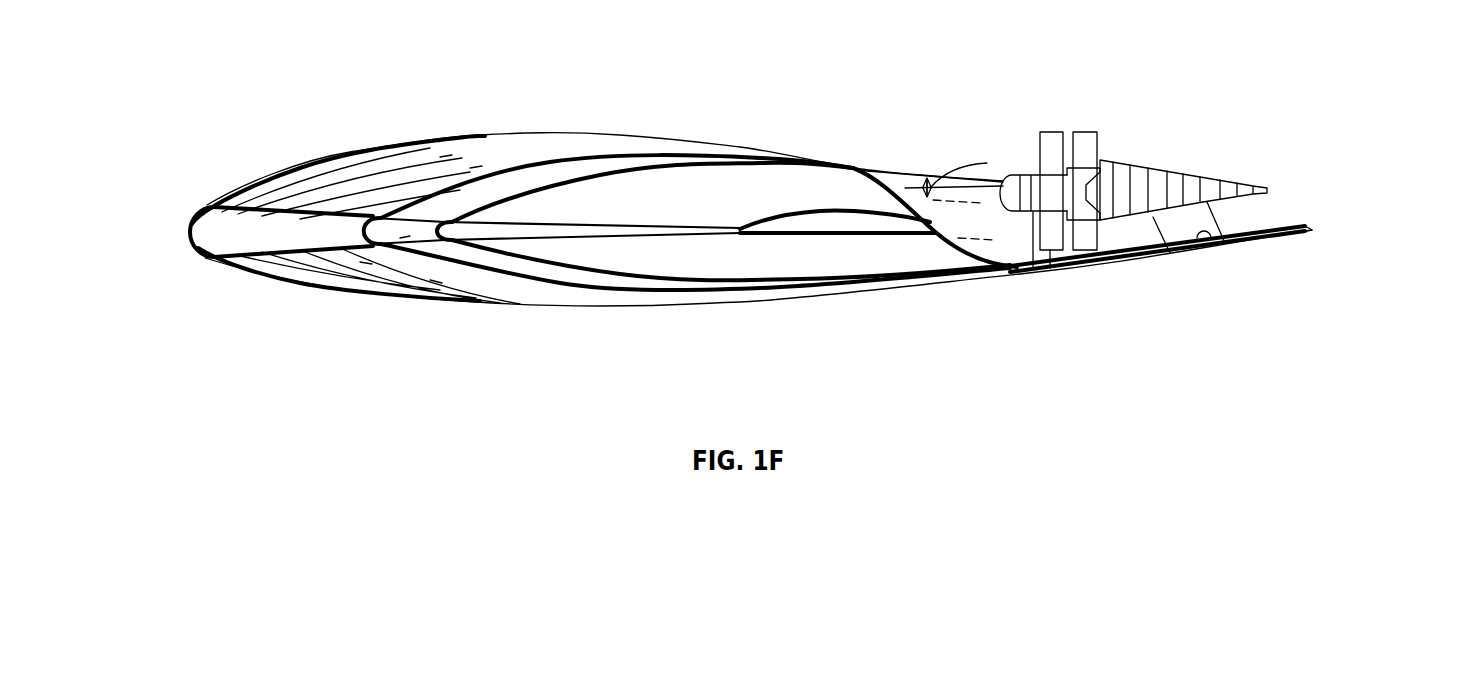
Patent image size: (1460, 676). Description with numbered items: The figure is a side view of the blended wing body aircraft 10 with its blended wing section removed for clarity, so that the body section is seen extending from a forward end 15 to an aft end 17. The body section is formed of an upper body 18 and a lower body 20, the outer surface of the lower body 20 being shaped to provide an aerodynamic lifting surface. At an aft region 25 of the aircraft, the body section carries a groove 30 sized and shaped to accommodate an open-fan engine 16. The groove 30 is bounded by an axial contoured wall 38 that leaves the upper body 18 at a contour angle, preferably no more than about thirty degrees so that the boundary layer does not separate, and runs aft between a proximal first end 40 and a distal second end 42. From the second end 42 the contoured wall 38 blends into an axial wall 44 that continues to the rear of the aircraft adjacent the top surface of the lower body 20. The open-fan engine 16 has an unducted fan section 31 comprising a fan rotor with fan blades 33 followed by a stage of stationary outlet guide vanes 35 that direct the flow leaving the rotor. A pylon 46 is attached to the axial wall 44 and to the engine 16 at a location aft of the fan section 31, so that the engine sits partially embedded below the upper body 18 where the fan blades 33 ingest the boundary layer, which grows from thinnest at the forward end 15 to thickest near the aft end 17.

The blended wing body aircraft 10 is at (283, 92).
The forward end 15 is at (158, 238).
The open-fan engine 16 is at (1184, 176).
The aft end 17 is at (1375, 222).
The upper body 18 is at (437, 138).
The lower body 20 is at (450, 303).
The aft region 25 is at (1199, 156).
The groove 30 is at (957, 158).
The unducted fan section 31 is at (1072, 126).
The fan blades 33 is at (1058, 130).
The outlet guide vanes 35 is at (1088, 130).
The axial contoured wall 38 is at (905, 186).
The first end 40 is at (855, 168).
The second end 42 is at (1043, 272).
The axial wall 44 is at (1228, 243).
The pylon 46 is at (1152, 228).